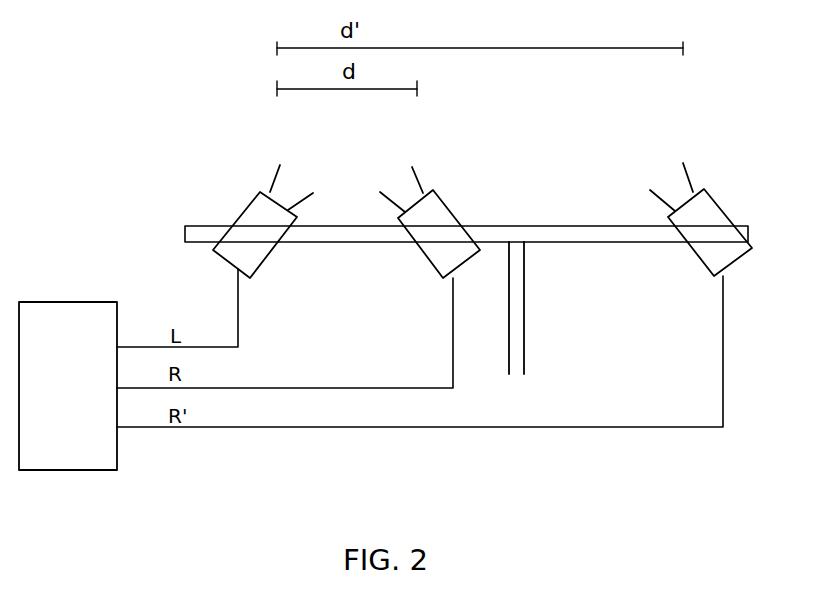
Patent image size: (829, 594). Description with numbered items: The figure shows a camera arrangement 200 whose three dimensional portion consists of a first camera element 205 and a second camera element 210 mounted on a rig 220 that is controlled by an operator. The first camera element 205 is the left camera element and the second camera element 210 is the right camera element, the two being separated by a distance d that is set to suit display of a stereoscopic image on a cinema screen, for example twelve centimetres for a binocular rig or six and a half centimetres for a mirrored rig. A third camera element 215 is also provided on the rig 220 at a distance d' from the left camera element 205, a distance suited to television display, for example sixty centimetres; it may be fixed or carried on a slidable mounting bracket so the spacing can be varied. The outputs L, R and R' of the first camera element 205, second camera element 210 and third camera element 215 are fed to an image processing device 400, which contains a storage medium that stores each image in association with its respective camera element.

The camera arrangement 200 is at (170, 135).
The first camera element 205 is at (267, 182).
The second camera element 210 is at (448, 188).
The third camera element 215 is at (720, 188).
The rig 220 is at (185, 227).
The image processing device 400 is at (62, 302).